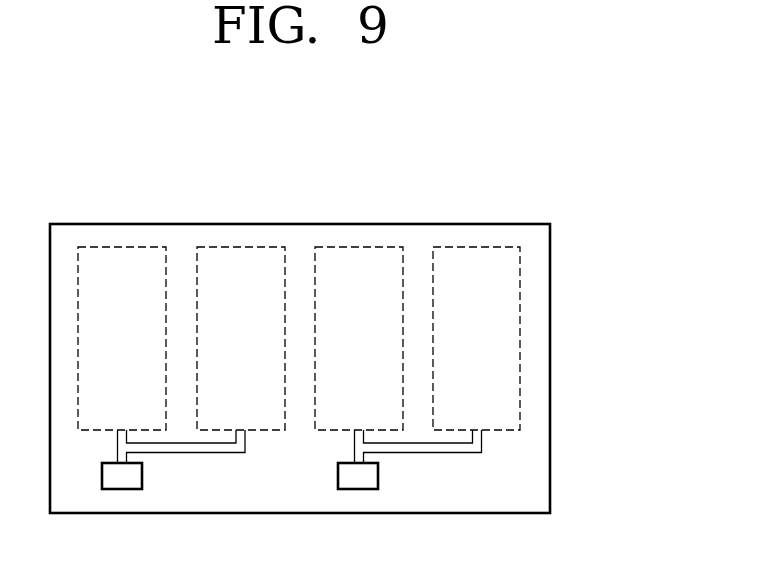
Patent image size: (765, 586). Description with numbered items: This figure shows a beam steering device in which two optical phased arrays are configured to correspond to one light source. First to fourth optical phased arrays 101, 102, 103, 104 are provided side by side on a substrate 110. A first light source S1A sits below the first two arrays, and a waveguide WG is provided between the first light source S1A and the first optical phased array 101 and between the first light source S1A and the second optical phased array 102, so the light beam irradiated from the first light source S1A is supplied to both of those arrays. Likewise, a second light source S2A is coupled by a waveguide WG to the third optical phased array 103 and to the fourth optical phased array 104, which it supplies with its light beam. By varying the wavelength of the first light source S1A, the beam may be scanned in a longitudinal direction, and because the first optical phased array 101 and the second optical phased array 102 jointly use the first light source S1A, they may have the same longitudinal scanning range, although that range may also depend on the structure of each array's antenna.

The first optical phased array 101 is at (143, 247).
The second optical phased array 102 is at (262, 247).
The third optical phased array 103 is at (380, 247).
The fourth optical phased array 104 is at (499, 247).
The substrate 110 is at (550, 262).
The first light source S1A is at (112, 489).
The second light source S2A is at (348, 489).
The waveguide WG is at (185, 452).